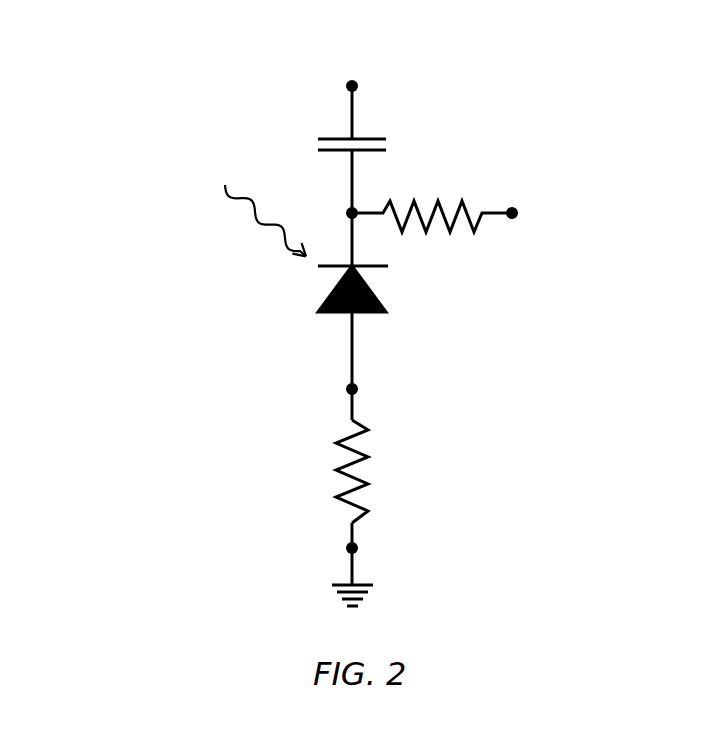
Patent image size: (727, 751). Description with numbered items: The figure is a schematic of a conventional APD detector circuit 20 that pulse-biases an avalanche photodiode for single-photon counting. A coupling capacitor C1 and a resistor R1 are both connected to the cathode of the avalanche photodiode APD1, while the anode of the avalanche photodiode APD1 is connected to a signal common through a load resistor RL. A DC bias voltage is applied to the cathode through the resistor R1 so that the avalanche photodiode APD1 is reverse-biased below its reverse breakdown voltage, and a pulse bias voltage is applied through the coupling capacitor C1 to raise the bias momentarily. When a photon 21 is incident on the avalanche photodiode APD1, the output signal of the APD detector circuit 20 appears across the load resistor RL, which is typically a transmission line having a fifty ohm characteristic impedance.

The APD detector circuit 20 is at (204, 38).
The photon 21 is at (253, 277).
The coupling capacitor C1 is at (379, 149).
The resistor R1 is at (435, 256).
The avalanche photodiode APD1 is at (335, 313).
The load resistor RL is at (326, 471).